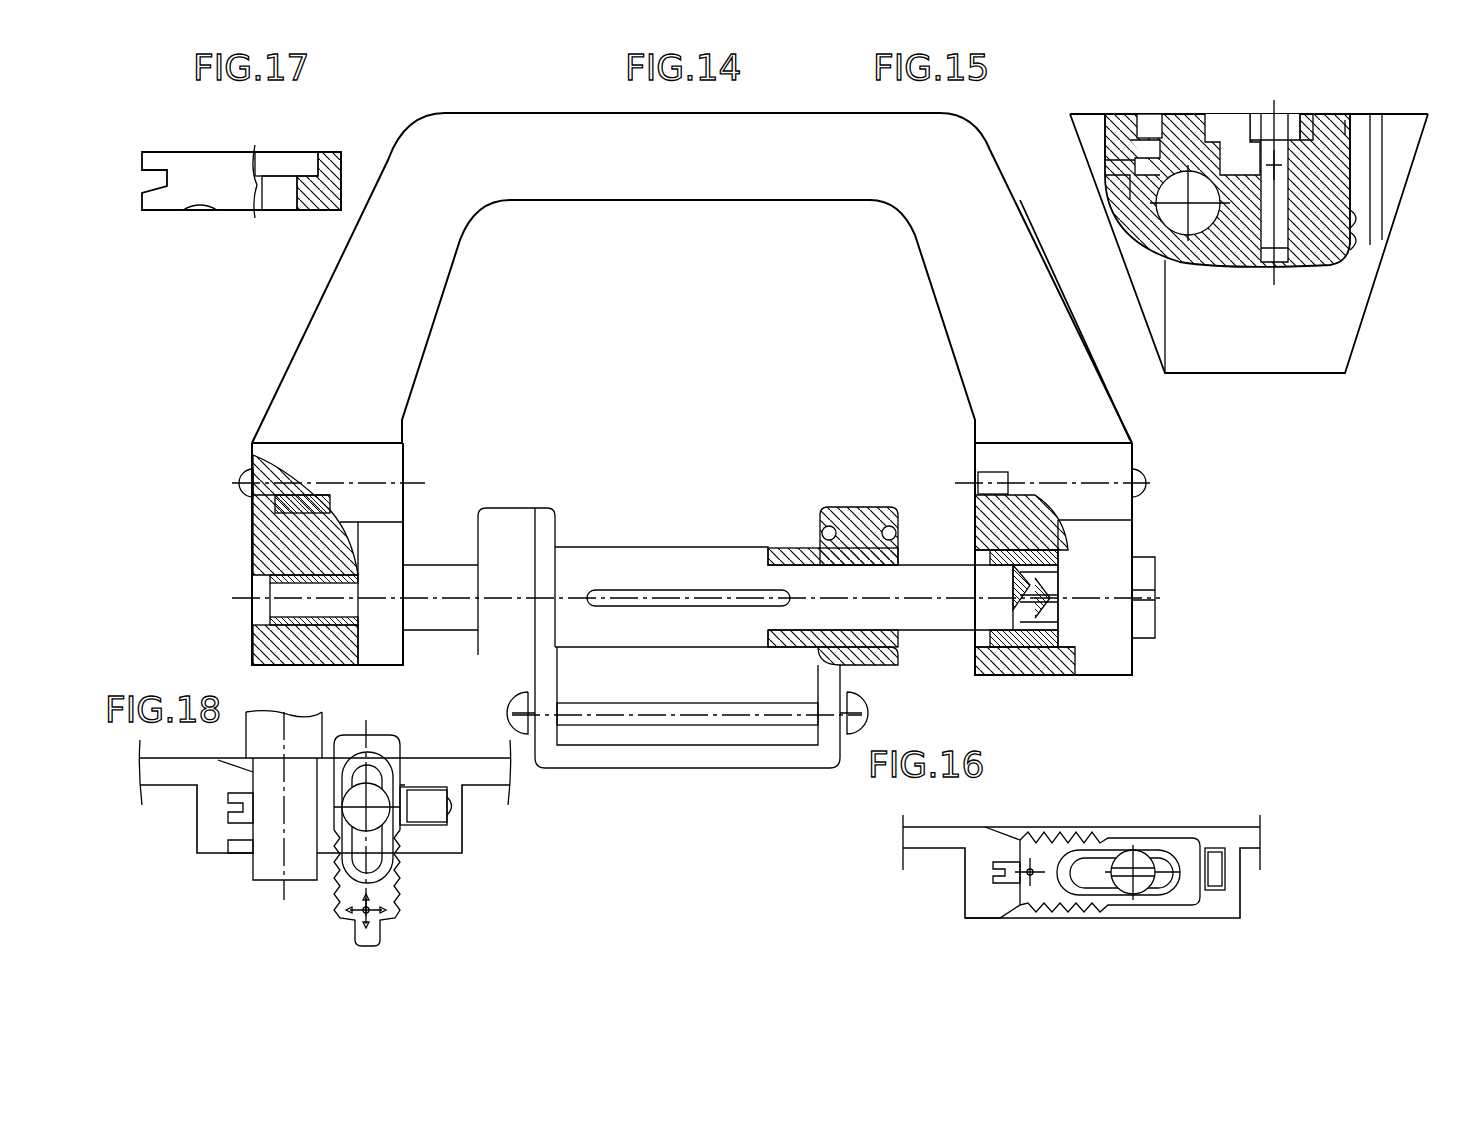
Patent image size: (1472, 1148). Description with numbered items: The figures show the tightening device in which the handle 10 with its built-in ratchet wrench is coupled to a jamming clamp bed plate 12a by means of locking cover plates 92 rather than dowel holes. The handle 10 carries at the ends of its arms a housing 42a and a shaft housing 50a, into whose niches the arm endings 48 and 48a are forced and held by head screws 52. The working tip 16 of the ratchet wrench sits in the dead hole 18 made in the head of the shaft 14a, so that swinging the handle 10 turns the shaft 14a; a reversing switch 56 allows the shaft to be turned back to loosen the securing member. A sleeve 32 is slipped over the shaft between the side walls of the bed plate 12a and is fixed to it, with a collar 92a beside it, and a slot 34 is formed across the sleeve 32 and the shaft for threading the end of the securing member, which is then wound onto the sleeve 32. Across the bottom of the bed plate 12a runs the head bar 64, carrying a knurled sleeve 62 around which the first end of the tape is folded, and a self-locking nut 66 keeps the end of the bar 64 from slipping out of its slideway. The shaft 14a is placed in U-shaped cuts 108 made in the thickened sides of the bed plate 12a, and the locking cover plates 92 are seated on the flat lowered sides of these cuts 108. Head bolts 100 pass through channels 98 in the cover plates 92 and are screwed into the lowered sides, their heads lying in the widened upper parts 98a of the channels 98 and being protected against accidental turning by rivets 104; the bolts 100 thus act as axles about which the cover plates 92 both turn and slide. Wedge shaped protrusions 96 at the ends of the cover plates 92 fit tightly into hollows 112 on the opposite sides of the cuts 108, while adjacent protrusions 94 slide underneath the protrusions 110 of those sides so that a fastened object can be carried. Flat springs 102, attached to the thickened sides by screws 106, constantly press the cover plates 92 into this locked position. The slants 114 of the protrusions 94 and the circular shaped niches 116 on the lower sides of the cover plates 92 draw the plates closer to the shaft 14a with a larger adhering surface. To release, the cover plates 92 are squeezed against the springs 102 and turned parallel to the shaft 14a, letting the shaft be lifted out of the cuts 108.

In FIG. 14, the handle 10 is at (692, 394).
In FIG. 14, the jamming clamp bed plate 12a is at (640, 757).
In FIG. 15, the jamming clamp bed plate 12a is at (1282, 330).
In FIG. 18, the jamming clamp bed plate 12a is at (324, 796).
In FIG. 16, the jamming clamp bed plate 12a is at (1081, 866).
In FIG. 14, the shaft 14a is at (283, 588).
In FIG. 15, the shaft 14a is at (1200, 215).
In FIG. 18, the shaft 14a is at (270, 857).
In FIG. 14, the working tip 16 is at (1055, 612).
In FIG. 14, the dead hole 18 is at (1010, 600).
In FIG. 14, the sleeve 32 is at (660, 567).
In FIG. 18, the sleeve 32 is at (267, 733).
In FIG. 14, the slot 34 is at (607, 596).
In FIG. 14, the bearing block 42a is at (985, 660).
In FIG. 14, the endings of handle arms 48 is at (1095, 522).
In FIG. 14, the bolt 48a is at (300, 500).
In FIG. 14, the hub flange 50a is at (322, 650).
In FIG. 14, the head screws 52 is at (245, 478).
In FIG. 14, the reversing switch 56 is at (1152, 622).
In FIG. 14, the knurled sleeve 62 is at (700, 718).
In FIG. 14, the head bar 64 is at (852, 735).
In FIG. 14, the self-locking nut 66 is at (520, 735).
In FIG. 14, the locking cover plates 92 is at (843, 518).
In FIG. 15, the locking cover plates 92 is at (1165, 118).
In FIG. 17, the locking cover plates 92 is at (332, 158).
In FIG. 18, the locking cover plates 92 is at (385, 750).
In FIG. 16, the locking cover plates 92 is at (1085, 838).
In FIG. 14, the collar 92a is at (505, 530).
In FIG. 15, the protrusions 94 is at (1135, 165).
In FIG. 17, the protrusions 94 is at (158, 200).
In FIG. 15, the wedge shaped protrusions 96 is at (1150, 122).
In FIG. 17, the wedge shaped protrusions 96 is at (158, 160).
In FIG. 18, the wedge shaped protrusions 96 is at (360, 936).
In FIG. 16, the wedge shaped protrusions 96 is at (1010, 868).
In FIG. 15, the channels 98 is at (1240, 152).
In FIG. 17, the channels 98 is at (282, 195).
In FIG. 18, the channels 98 is at (372, 852).
In FIG. 16, the channels 98 is at (1165, 880).
In FIG. 15, the upper parts of channels 98a is at (1308, 120).
In FIG. 17, the upper parts of channels 98a is at (285, 160).
In FIG. 18, the upper parts of channels 98a is at (454, 935).
In FIG. 16, the upper parts of channels 98a is at (1165, 852).
In FIG. 15, the head bolts 100 is at (1256, 118).
In FIG. 18, the head bolts 100 is at (366, 807).
In FIG. 16, the head bolts 100 is at (1125, 855).
In FIG. 15, the flat springs 102 is at (1352, 125).
In FIG. 18, the flat springs 102 is at (435, 840).
In FIG. 16, the flat springs 102 is at (1220, 848).
In FIG. 15, the rivets 104 is at (1300, 235).
In FIG. 15, the screws 106 is at (1358, 242).
In FIG. 18, the screws 106 is at (450, 812).
In FIG. 15, the U-shaped cuts 108 is at (1172, 240).
In FIG. 15, the protrusions 110 is at (1029, 132).
In FIG. 18, the hollows 112 is at (240, 810).
In FIG. 16, the hollows 112 is at (990, 875).
In FIG. 15, the slants 114 is at (1135, 152).
In FIG. 17, the slants 114 is at (170, 188).
In FIG. 17, the circular shaped niches 116 is at (205, 208).